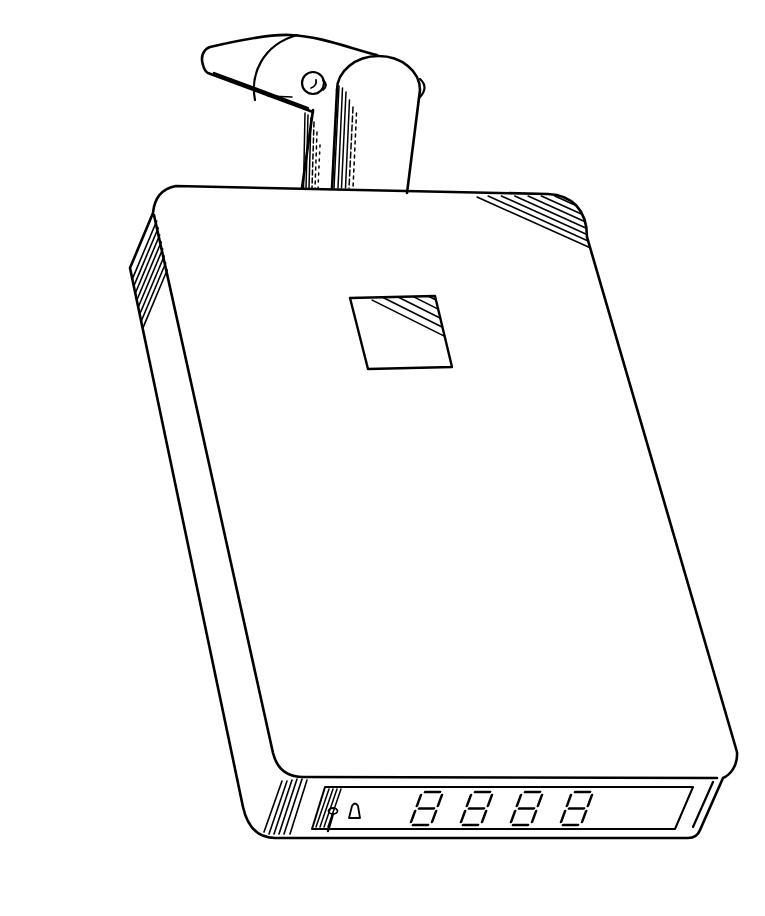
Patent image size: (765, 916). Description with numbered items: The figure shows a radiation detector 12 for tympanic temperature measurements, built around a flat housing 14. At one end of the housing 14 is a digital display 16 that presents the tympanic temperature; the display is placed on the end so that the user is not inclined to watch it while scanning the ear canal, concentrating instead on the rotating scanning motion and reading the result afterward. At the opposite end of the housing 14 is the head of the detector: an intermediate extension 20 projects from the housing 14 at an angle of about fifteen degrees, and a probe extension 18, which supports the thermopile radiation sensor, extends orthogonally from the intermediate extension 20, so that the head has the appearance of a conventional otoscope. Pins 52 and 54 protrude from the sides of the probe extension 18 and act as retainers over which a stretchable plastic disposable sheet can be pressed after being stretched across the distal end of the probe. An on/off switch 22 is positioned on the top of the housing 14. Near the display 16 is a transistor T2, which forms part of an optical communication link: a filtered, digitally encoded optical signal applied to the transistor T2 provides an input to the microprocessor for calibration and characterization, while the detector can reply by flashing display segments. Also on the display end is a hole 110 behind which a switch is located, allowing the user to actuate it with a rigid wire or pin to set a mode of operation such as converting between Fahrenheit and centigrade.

The radiation detector 12 is at (136, 573).
The flat housing 14 is at (235, 667).
The digital display 16 is at (535, 827).
The probe extension 18 is at (357, 50).
The intermediate extension 20 is at (400, 157).
The on/off switch 22 is at (440, 332).
The pin 52 is at (315, 72).
The pin 54 is at (428, 90).
The hole 110 is at (331, 816).
The transistor T2 is at (356, 819).